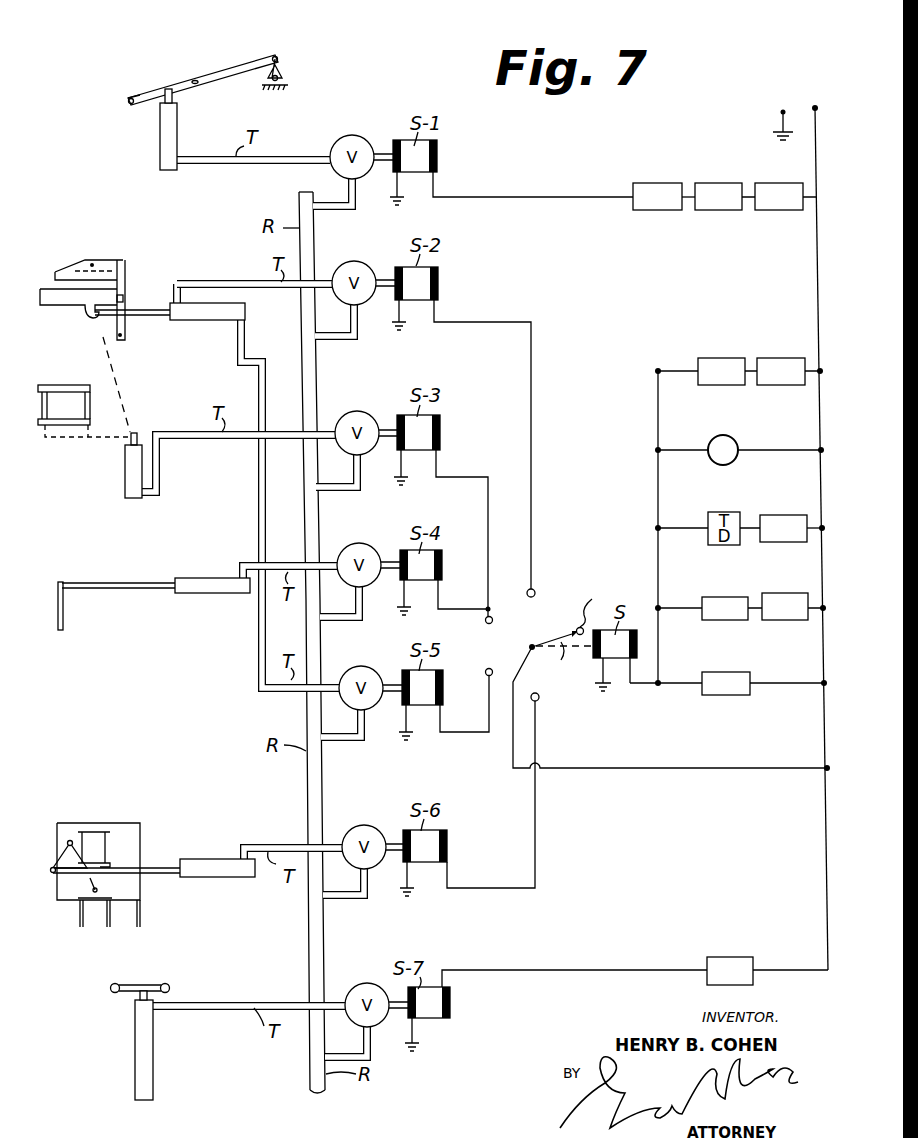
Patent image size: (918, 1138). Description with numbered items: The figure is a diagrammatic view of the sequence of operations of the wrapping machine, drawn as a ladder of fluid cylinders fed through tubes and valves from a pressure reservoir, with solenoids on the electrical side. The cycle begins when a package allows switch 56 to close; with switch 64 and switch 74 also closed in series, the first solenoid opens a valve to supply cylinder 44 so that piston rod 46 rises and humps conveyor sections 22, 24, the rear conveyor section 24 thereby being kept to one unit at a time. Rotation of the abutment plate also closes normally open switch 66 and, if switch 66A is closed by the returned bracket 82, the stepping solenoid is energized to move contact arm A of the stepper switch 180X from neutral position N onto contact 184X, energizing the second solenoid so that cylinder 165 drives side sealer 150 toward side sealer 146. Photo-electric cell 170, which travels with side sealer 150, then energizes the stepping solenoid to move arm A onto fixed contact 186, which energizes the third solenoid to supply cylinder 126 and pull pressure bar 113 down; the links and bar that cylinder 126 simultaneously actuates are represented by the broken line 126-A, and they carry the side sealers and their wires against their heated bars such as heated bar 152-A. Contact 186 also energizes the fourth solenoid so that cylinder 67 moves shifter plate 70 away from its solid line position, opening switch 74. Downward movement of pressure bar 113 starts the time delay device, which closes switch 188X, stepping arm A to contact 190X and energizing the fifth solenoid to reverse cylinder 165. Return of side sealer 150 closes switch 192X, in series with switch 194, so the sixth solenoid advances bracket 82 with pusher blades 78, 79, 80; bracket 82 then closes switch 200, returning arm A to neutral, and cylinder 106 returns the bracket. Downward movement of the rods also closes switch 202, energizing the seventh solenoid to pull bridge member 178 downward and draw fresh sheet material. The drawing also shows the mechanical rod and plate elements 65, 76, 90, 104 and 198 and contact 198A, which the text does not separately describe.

The conveyor section 22 is at (237, 53).
The rear conveyor section 24 is at (142, 86).
The cylinder 44 is at (158, 136).
The piston rod 46 is at (174, 96).
The switch 56 is at (557, 191).
The switch 64 is at (712, 196).
The switch 74 is at (779, 196).
The normally open switch 66 is at (700, 371).
The switch 66A is at (784, 371).
The side sealer 150 is at (72, 271).
The heated bar 152-A is at (55, 312).
The pressure bar 113 is at (70, 384).
The broken line 126-A is at (123, 385).
The cylinder 126 is at (125, 468).
The cylinder 165 is at (204, 320).
The rod 65 is at (125, 570).
The cylinder 67 is at (205, 600).
The shifter plate 70 is at (64, 609).
The feed mechanism 76 is at (113, 867).
The bracket 82 is at (140, 843).
The linkage 90 is at (86, 896).
The pusher blade 80 is at (80, 925).
The pusher blade 79 is at (118, 928).
The pusher blade 78 is at (141, 920).
The rod 104 is at (162, 874).
The cylinder 106 is at (222, 878).
The bridge member 178 is at (135, 984).
The side sealer 146 is at (132, 996).
The cylinder 198 is at (153, 1043).
The photo-electric cell 170 is at (736, 438).
The switch 188X is at (792, 528).
The switch 192X is at (701, 608).
The switch 194 is at (787, 606).
The switch 200 is at (728, 683).
The switch 202 is at (635, 972).
The contact 184X is at (535, 590).
The stepper switch 180X is at (572, 636).
The fixed contact 186 is at (485, 626).
The contact 190X is at (489, 669).
The contact 198A is at (538, 700).